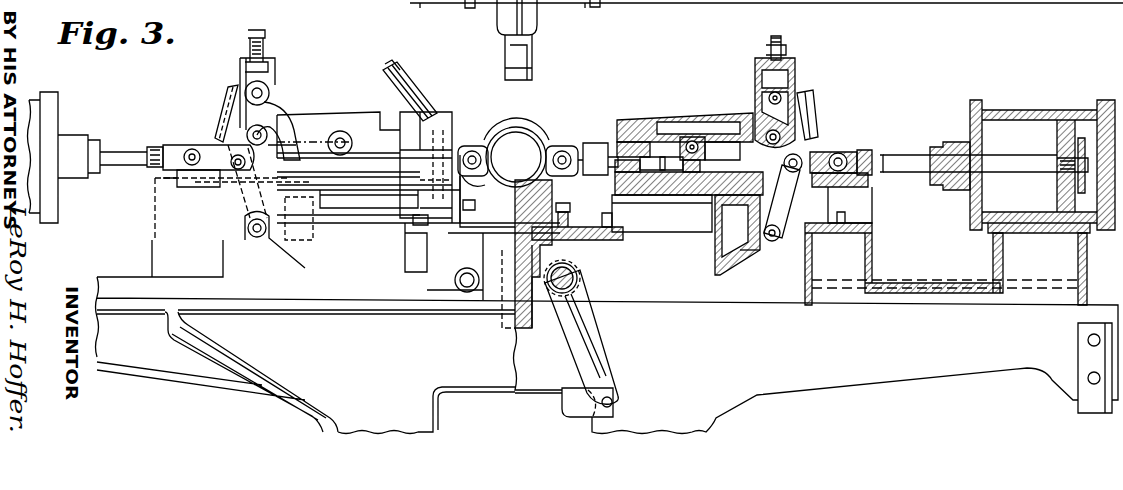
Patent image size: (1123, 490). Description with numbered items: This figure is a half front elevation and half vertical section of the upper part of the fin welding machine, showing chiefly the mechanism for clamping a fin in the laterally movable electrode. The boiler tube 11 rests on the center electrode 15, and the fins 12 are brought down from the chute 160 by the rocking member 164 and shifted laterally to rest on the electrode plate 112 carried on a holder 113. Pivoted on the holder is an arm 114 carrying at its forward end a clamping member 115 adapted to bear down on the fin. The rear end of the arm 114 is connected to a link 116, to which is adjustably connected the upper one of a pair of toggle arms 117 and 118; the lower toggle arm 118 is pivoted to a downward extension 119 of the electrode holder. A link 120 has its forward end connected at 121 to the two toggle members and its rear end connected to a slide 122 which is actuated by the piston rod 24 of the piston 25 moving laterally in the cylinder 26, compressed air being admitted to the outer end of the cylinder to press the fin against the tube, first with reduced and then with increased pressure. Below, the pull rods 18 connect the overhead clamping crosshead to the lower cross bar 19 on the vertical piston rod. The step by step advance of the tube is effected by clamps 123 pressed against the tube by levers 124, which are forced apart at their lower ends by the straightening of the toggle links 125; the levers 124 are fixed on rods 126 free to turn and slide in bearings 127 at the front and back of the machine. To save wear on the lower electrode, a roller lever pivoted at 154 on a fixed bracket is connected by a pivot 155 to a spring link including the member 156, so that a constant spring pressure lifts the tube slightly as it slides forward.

The boiler tube 11 is at (514, 125).
The fin 12 is at (598, 159).
The center electrode 15 is at (517, 215).
The pull rods 18 is at (413, 224).
The lower cross bar 19 is at (455, 243).
The piston rod 24 is at (110, 150).
The piston 25 is at (1058, 190).
The cylinder 26 is at (45, 100).
The electrode plate 112 is at (575, 210).
The holder 113 is at (680, 200).
The arm 114 is at (310, 115).
The clamping member 115 is at (618, 135).
The link 116 is at (240, 73).
The toggle arm 117 is at (228, 97).
The toggle arm 118 is at (775, 243).
The downward extension 119 is at (745, 262).
The link 120 is at (215, 152).
The pivot connection 121 is at (232, 167).
The slide 122 is at (160, 146).
The clamps 123 is at (485, 140).
The levers 124 is at (598, 336).
The toggle links 125 is at (566, 407).
The rods 126 is at (455, 283).
The bearings 127 is at (583, 8).
The pivot 154 is at (420, 3).
The pivot 155 is at (505, 70).
The link member 156 is at (537, 28).
The chute 160 is at (388, 66).
The rocking member 164 is at (655, 160).